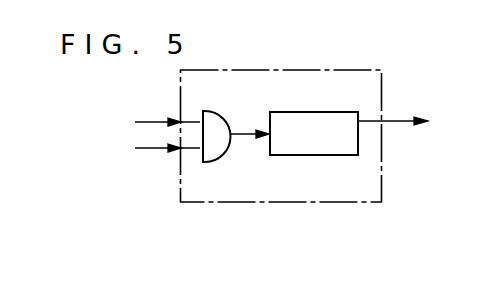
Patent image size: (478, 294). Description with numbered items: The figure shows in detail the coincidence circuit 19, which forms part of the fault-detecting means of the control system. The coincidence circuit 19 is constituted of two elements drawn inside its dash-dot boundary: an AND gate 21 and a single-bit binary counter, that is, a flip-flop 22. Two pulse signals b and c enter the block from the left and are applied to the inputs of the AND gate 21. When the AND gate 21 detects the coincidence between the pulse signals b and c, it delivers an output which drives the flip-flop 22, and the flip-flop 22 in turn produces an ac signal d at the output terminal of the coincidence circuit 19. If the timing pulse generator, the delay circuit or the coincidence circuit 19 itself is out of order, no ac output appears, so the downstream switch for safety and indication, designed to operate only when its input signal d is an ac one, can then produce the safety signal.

The coincidence circuit 19 is at (384, 96).
The AND gate 21 is at (232, 126).
The flip-flop 22 is at (328, 112).
The pulse signal b is at (163, 117).
The pulse signal c is at (163, 147).
The ac signal d is at (393, 118).